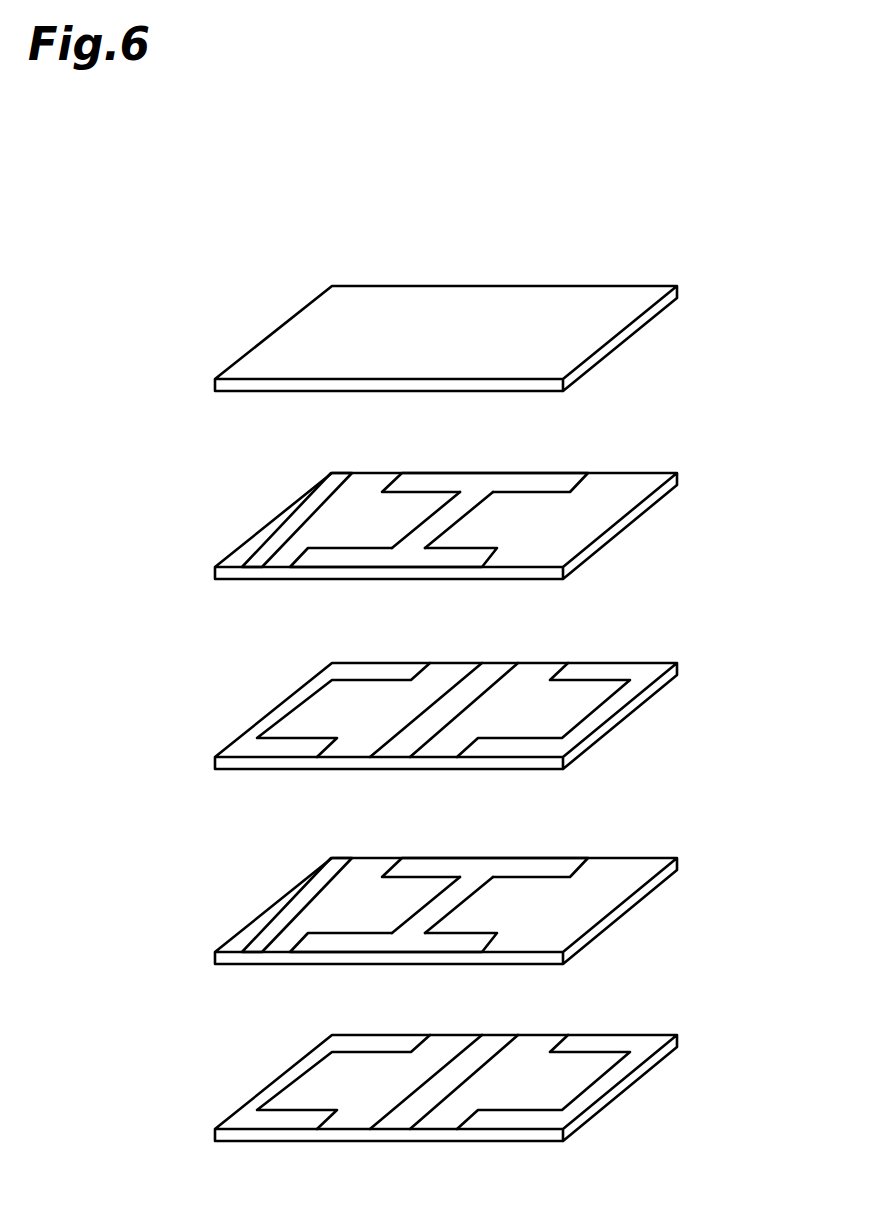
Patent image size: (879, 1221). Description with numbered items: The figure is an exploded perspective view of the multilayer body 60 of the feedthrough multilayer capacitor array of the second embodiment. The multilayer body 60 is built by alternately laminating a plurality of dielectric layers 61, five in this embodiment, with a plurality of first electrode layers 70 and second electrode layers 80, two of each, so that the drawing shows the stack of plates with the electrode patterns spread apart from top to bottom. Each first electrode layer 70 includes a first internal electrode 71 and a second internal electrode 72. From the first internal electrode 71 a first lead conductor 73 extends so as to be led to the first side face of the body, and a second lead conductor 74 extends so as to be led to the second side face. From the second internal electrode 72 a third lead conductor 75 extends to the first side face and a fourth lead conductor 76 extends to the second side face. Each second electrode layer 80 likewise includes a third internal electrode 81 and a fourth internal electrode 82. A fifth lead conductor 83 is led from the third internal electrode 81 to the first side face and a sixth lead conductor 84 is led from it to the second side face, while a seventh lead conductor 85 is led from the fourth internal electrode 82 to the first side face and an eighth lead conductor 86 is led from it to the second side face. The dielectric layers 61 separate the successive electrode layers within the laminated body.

The multilayer body 60 is at (88, 260).
The dielectric layer 61 is at (660, 314).
The first electrode layer 70 is at (157, 422).
The first internal electrode 71 is at (372, 480).
The second internal electrode 72 is at (520, 505).
The first lead conductor 73 is at (277, 555).
The second lead conductor 74 is at (410, 517).
The third lead conductor 75 is at (518, 557).
The fourth lead conductor 76 is at (613, 482).
The second electrode layer 80 is at (748, 615).
The third internal electrode 81 is at (333, 700).
The fourth internal electrode 82 is at (567, 703).
The fifth lead conductor 83 is at (350, 750).
The sixth lead conductor 84 is at (447, 672).
The seventh lead conductor 85 is at (447, 743).
The eighth lead conductor 86 is at (537, 673).